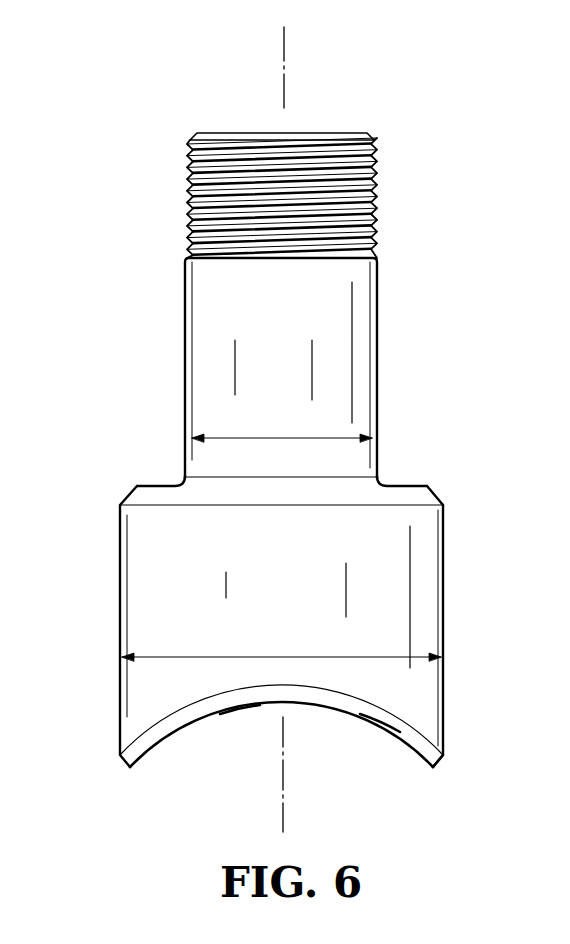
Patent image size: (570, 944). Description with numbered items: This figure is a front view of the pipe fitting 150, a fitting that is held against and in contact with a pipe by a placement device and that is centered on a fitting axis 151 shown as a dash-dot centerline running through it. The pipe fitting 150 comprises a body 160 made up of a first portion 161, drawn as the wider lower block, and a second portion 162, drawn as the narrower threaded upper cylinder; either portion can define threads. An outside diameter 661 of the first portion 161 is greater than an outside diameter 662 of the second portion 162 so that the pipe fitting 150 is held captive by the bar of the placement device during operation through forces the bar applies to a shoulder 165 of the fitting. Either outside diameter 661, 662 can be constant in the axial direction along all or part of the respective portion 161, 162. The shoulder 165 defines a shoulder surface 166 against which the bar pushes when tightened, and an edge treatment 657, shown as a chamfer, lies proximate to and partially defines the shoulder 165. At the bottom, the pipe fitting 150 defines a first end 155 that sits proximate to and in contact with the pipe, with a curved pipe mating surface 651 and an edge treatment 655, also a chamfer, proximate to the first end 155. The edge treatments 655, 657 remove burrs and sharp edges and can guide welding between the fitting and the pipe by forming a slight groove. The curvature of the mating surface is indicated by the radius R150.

The pipe fitting 150 is at (158, 92).
The fitting axis 151 is at (285, 88).
The second portion 162 is at (198, 285).
The outside diameter of second portion 662 is at (313, 438).
The shoulder 165 is at (163, 484).
The shoulder surface 166 is at (419, 483).
The edge treatment 657 is at (427, 502).
The first portion 161 is at (430, 548).
The body 160 is at (138, 565).
The outside diameter of first portion 661 is at (383, 656).
The edge treatment 655 is at (190, 718).
The pipe mating surface 651 is at (235, 712).
The first end 155 is at (413, 765).
The radius of curved surface R150 is at (387, 735).